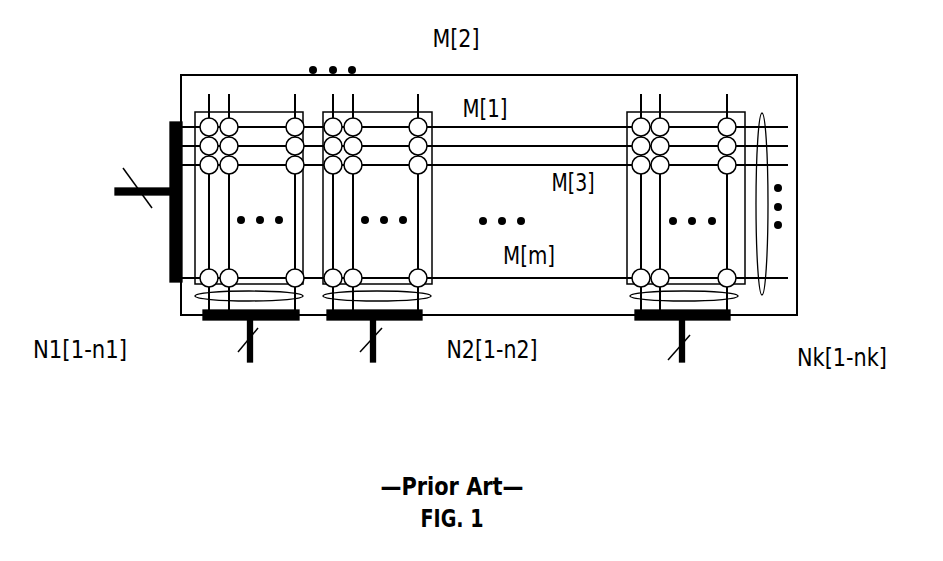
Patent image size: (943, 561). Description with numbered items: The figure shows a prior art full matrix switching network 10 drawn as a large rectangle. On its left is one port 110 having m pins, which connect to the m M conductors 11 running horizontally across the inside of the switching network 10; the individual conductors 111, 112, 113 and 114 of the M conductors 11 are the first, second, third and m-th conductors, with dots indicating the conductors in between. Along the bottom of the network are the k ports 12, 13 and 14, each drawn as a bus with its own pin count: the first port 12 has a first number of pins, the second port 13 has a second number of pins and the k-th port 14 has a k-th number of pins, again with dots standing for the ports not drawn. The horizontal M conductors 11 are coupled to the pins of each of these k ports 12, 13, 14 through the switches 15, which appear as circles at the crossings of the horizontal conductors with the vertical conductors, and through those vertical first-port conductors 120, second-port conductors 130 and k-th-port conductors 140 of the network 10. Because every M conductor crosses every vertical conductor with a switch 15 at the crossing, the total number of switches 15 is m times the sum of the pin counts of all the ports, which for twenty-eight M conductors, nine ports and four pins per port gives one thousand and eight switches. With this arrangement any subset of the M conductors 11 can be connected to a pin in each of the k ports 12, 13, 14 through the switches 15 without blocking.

The full matrix switching network 10 is at (800, 92).
The M conductors M[1-m] 11 is at (760, 220).
The port 12 is at (245, 322).
The port 13 is at (370, 323).
The port 14 is at (687, 322).
The switches 15 is at (627, 112).
The port 110 is at (168, 200).
The conductor M[1] 111 is at (447, 127).
The conductor M[2] 112 is at (535, 145).
The conductor M[3] 113 is at (584, 165).
The conductor M[m] 114 is at (545, 279).
The N1[1-n1] conductors 120 is at (198, 298).
The N2[1-n2] conductors 130 is at (423, 299).
The Nk[1-nk] conductors 140 is at (733, 300).